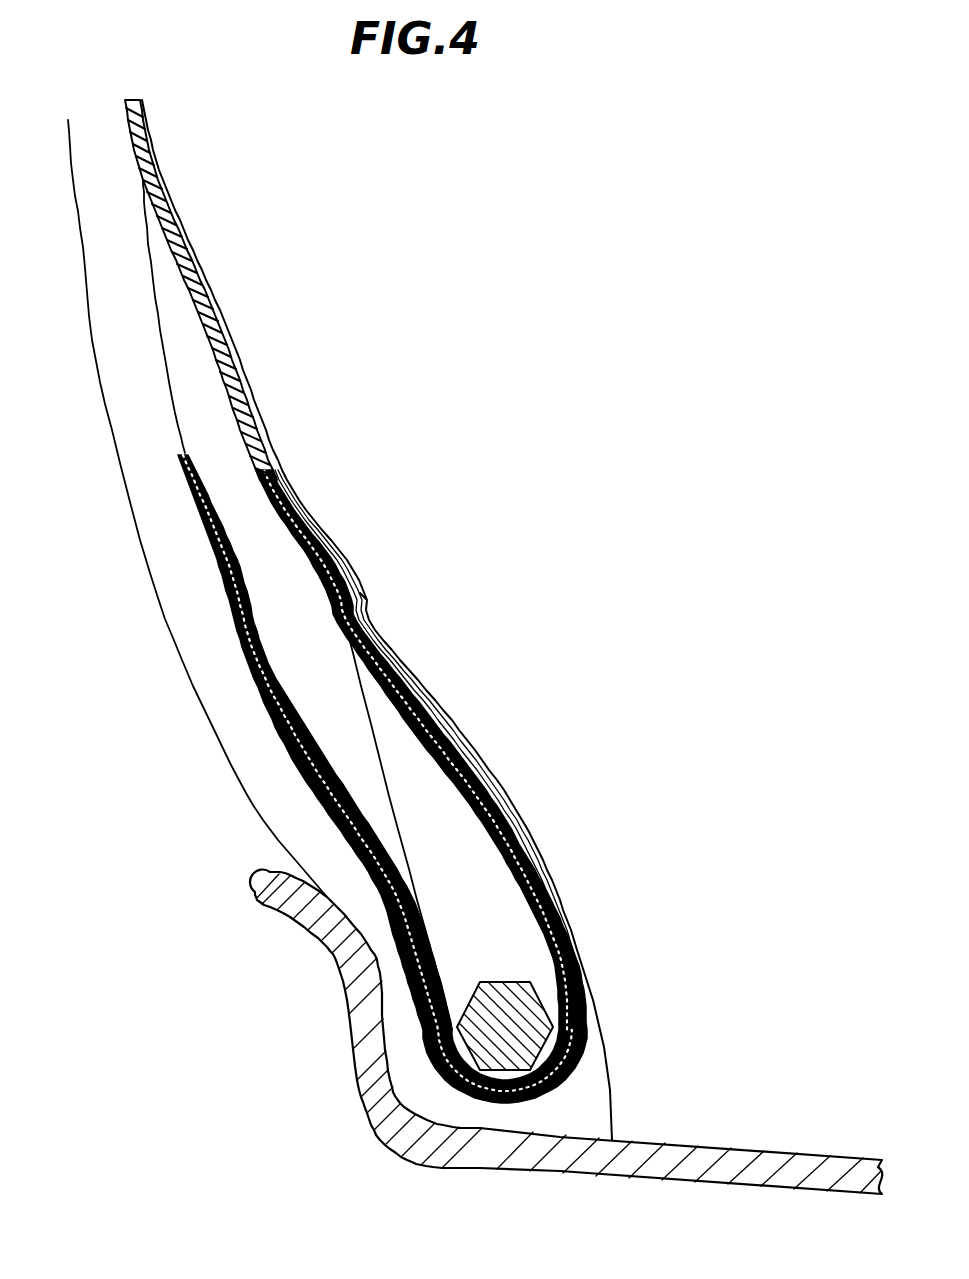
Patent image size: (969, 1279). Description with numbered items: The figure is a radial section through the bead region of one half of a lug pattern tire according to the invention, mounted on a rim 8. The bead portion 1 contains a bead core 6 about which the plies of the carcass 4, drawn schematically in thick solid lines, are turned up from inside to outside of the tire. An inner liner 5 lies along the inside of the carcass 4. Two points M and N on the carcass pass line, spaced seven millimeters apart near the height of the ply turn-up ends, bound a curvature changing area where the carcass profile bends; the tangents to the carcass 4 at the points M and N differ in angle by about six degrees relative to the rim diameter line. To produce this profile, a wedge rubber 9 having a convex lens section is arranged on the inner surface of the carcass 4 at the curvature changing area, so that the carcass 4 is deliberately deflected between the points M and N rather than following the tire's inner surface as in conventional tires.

The bead portion 1 is at (297, 835).
The carcass 4 is at (165, 207).
The inner liner 5 is at (200, 270).
The bead core 6 is at (527, 1013).
The rim 8 is at (672, 1143).
The wedge rubber 9 is at (337, 560).
The point M is at (317, 547).
The point N is at (360, 593).